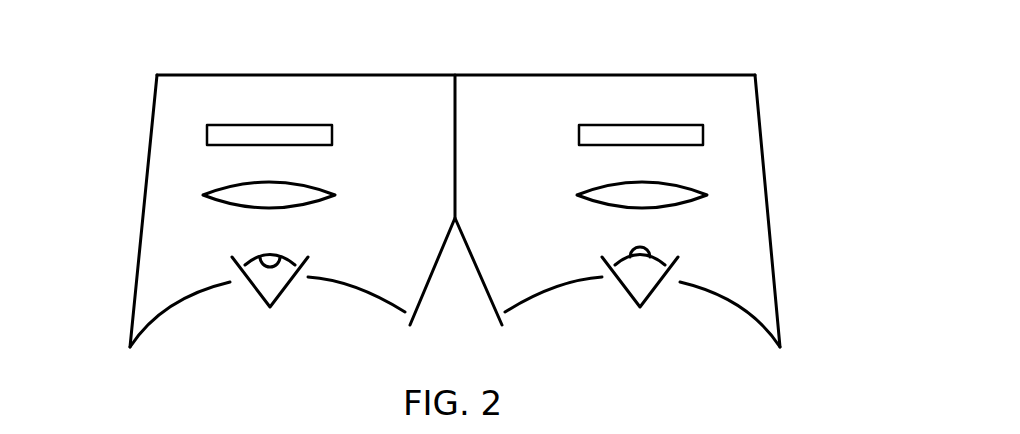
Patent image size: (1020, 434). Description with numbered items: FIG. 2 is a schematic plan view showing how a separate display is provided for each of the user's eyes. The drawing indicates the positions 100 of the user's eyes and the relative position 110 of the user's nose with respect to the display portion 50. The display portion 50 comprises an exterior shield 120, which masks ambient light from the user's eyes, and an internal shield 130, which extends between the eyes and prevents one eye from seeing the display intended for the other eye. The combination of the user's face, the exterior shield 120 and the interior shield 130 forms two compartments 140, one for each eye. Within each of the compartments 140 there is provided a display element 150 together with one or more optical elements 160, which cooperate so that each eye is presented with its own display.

The display portion 50 is at (497, 180).
The positions of the user's eyes 100 is at (276, 292).
The relative position of the user's nose 110 is at (480, 268).
The exterior shield 120 is at (537, 73).
The internal shield 130 is at (457, 147).
The compartments 140 is at (318, 97).
The display element 150 is at (227, 135).
The optical elements 160 is at (203, 195).